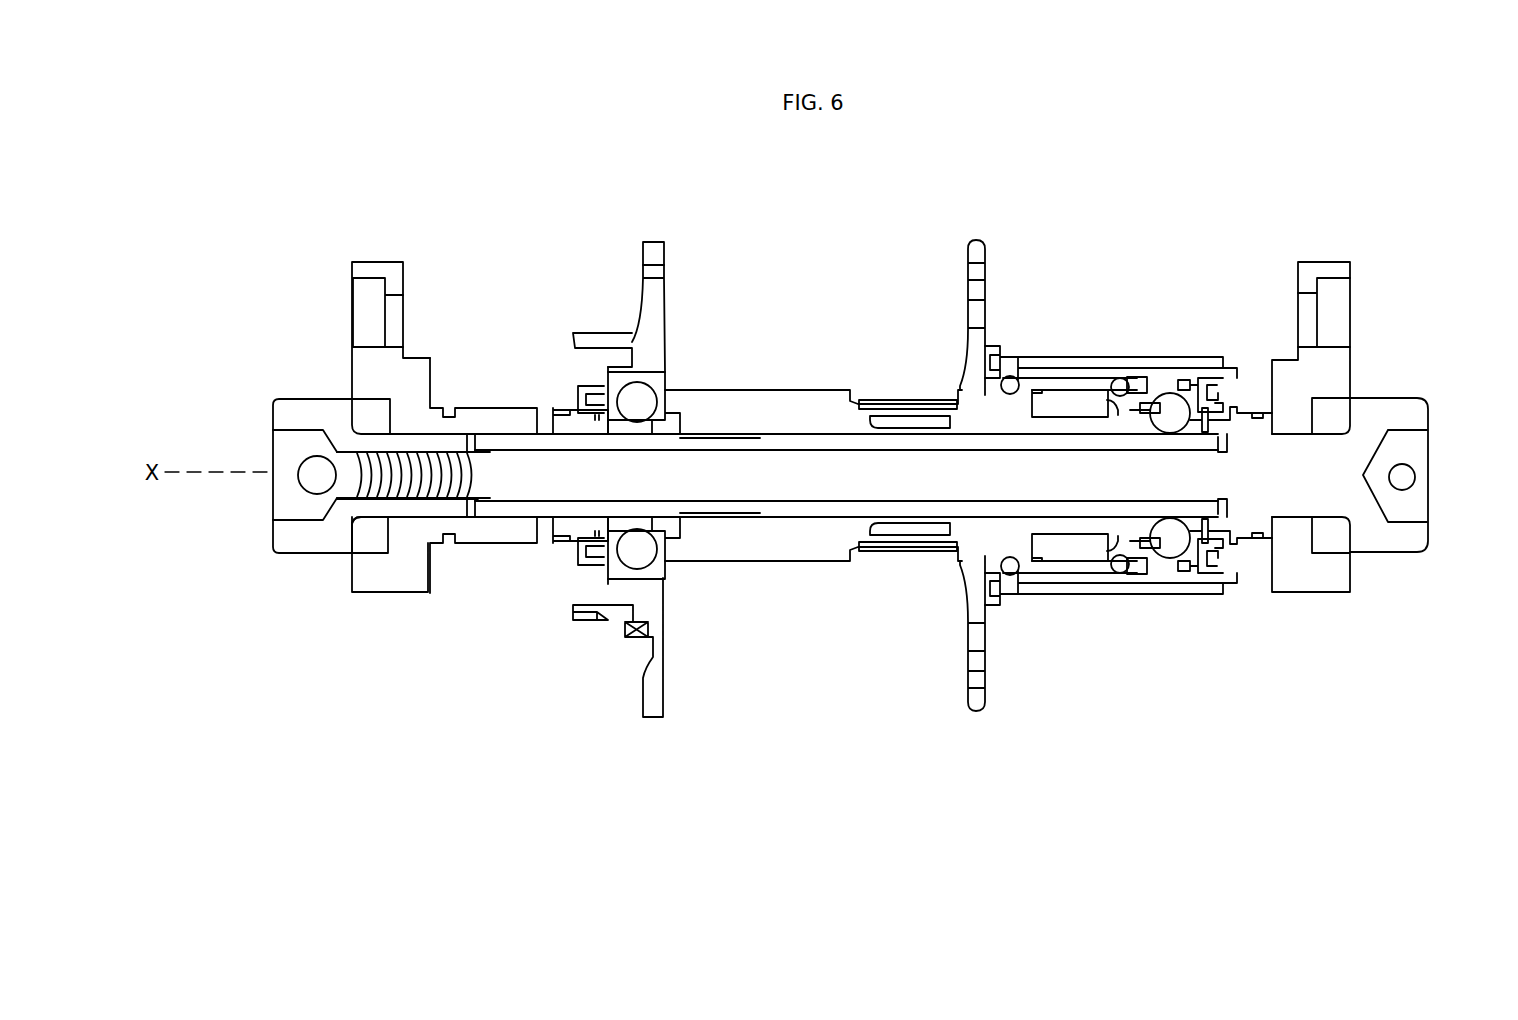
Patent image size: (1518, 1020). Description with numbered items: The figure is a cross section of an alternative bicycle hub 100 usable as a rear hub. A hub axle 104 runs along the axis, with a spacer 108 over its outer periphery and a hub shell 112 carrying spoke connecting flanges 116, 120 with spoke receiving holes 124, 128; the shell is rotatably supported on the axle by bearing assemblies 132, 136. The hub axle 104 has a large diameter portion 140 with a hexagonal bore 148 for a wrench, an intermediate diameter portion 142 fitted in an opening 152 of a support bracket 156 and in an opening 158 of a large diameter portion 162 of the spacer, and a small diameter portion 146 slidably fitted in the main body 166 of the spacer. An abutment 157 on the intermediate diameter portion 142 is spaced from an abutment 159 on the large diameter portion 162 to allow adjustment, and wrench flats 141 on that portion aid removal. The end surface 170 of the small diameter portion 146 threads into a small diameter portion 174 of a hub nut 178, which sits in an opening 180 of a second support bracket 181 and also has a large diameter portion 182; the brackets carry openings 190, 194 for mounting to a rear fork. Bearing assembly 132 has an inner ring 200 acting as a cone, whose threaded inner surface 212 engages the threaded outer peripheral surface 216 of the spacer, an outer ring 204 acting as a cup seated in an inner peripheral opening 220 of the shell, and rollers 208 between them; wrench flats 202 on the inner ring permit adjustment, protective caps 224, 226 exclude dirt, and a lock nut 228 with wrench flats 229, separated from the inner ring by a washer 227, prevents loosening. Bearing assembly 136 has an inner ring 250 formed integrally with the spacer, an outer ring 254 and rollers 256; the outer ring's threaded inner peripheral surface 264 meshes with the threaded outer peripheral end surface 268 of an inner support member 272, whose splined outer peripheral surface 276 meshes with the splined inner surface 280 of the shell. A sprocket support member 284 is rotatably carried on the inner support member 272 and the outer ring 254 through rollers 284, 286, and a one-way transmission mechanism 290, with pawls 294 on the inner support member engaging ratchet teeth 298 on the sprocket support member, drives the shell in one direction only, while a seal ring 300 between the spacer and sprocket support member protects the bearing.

The bicycle hub 100 is at (570, 212).
The hub axle 104 is at (1384, 470).
The spacer 108 is at (760, 507).
The hub shell 112 is at (773, 388).
The spoke connecting flange 116 is at (645, 279).
The spoke connecting flange 120 is at (977, 245).
The spoke receiving hole 124 is at (652, 275).
The spoke receiving hole 128 is at (978, 274).
The bearing assembly 132 is at (673, 363).
The bearing assembly 136 is at (1175, 360).
The large diameter portion 140 is at (1375, 542).
The wrench flats 141 is at (1258, 540).
The intermediate diameter portion 142 is at (1311, 554).
The small diameter portion 146 is at (830, 480).
The hexagonal bore 148 is at (1417, 450).
The opening 152 is at (1313, 507).
The support bracket 156 is at (1336, 323).
The abutment 157 is at (1230, 443).
The opening 158 is at (1257, 517).
The abutment 159 is at (1217, 447).
The large diameter portion 162 is at (1223, 580).
The main body 166 is at (825, 443).
The end surface 170 is at (425, 482).
The small diameter portion 174 is at (378, 503).
The hub nut 178 is at (354, 464).
The opening 180 is at (412, 507).
The support bracket 181 is at (371, 323).
The large diameter portion 182 is at (311, 405).
The opening 190 is at (1343, 280).
The opening 194 is at (362, 285).
The inner ring 200 is at (573, 420).
The wrench flats 202 is at (560, 543).
The outer ring 204 is at (667, 363).
The rollers 208 is at (638, 400).
The threaded inner surface 212 is at (605, 510).
The threaded outer peripheral surface 216 is at (680, 434).
The inner peripheral opening 220 is at (635, 372).
The protective cap 224 is at (607, 373).
The protective cap 226 is at (580, 384).
The washer 227 is at (548, 543).
The lock nut 228 is at (477, 413).
The wrench flats 229 is at (445, 415).
The inner ring 250 is at (1193, 430).
The outer ring 254 is at (1142, 385).
The rollers 256 is at (1167, 417).
The threaded inner peripheral surface 264 is at (1115, 405).
The threaded outer peripheral end surface 268 is at (1103, 405).
The inner support member 272 is at (983, 408).
The splined outer peripheral surface 276 is at (912, 402).
The splined inner surface 280 is at (857, 403).
The sprocket support member 284 is at (1008, 378).
The rollers 286 is at (1118, 382).
The one-way transmission mechanism 290 is at (1023, 410).
The pawls 294 is at (1030, 408).
The ratchet teeth 298 is at (1057, 390).
The seal ring 300 is at (1207, 395).